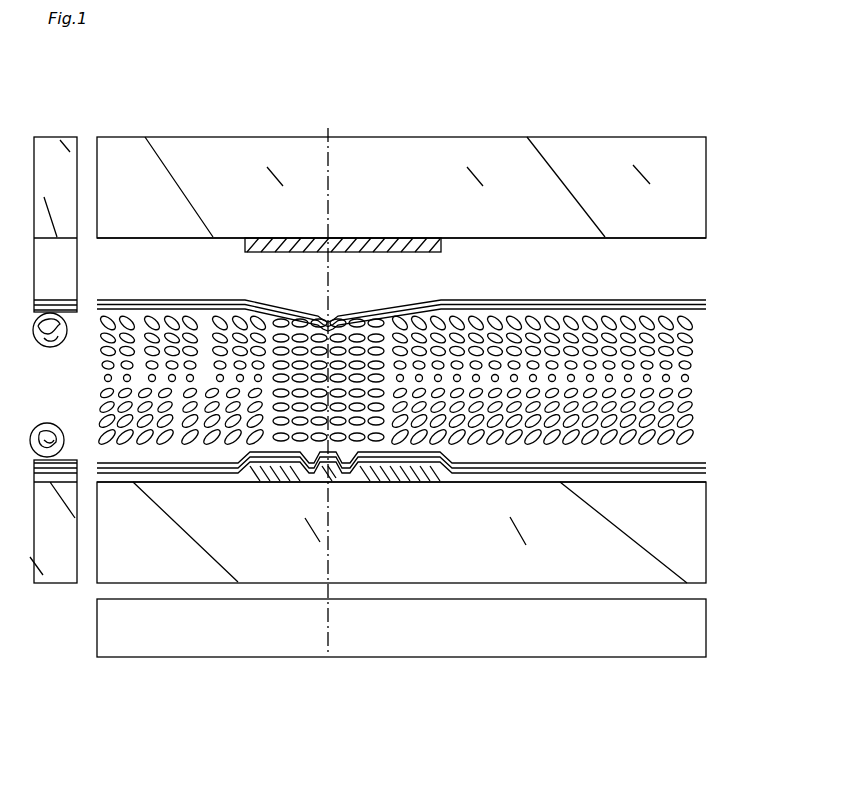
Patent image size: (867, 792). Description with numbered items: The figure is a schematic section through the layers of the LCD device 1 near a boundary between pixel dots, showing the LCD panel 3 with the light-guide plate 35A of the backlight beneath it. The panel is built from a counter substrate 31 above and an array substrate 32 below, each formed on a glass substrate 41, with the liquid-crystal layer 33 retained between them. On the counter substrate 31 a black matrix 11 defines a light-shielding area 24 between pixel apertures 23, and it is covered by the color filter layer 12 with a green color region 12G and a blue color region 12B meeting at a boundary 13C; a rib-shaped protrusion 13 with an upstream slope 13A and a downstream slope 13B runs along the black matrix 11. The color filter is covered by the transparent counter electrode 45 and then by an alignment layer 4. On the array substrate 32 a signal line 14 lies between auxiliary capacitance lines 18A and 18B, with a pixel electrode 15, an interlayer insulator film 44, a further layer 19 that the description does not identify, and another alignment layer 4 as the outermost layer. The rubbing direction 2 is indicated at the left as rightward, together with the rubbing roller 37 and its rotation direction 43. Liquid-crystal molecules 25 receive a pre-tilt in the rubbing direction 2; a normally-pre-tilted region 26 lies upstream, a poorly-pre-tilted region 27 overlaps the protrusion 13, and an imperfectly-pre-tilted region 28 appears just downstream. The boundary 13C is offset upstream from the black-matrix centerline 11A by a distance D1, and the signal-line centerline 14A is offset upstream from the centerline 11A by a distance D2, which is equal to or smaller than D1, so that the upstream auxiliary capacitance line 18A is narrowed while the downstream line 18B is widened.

The LCD device 1 is at (63, 111).
The rubbing direction 2 is at (69, 386).
The LCD panel 3 is at (438, 398).
The alignment layer 4 is at (707, 310).
The black matrix 11 is at (348, 245).
The black-matrix centerline 11A is at (342, 702).
The color filter layer 12 is at (416, 261).
The green color region 12G is at (159, 272).
The blue color region 12B is at (495, 272).
The rib-shaped protrusion 13 is at (298, 272).
The upstream slope 13A is at (292, 318).
The downstream slope 13B is at (355, 320).
The boundary between color regions 13C is at (329, 98).
The signal line 14 is at (322, 481).
The signal-line centerline 14A is at (330, 688).
The pixel electrode 15 is at (707, 468).
The auxiliary capacitance line 18A is at (262, 481).
The auxiliary capacitance line 18B is at (395, 481).
The gate insulating film 19 is at (687, 482).
The pixel aperture 23 is at (441, 92).
The light-shielding area 24 is at (443, 718).
The liquid-crystal molecule 25 is at (733, 300).
The normally-pre-tilted region 26 is at (427, 62).
The poorly-pre-tilted region 27 is at (387, 440).
The imperfectly-pre-tilted region 28 is at (260, 445).
The counter substrate 31 is at (730, 137).
The array substrate 32 is at (752, 524).
The liquid-crystal layer 33 is at (433, 391).
The light-guide plate 35A is at (695, 632).
The rubbing roller 37 is at (48, 338).
The glass substrate 41 is at (701, 207).
The rotation direction 43 is at (38, 314).
The interlayer insulator film 44 is at (690, 474).
The counter electrode 45 is at (706, 301).
The distance D1 is at (345, 120).
The distance D2 is at (328, 672).